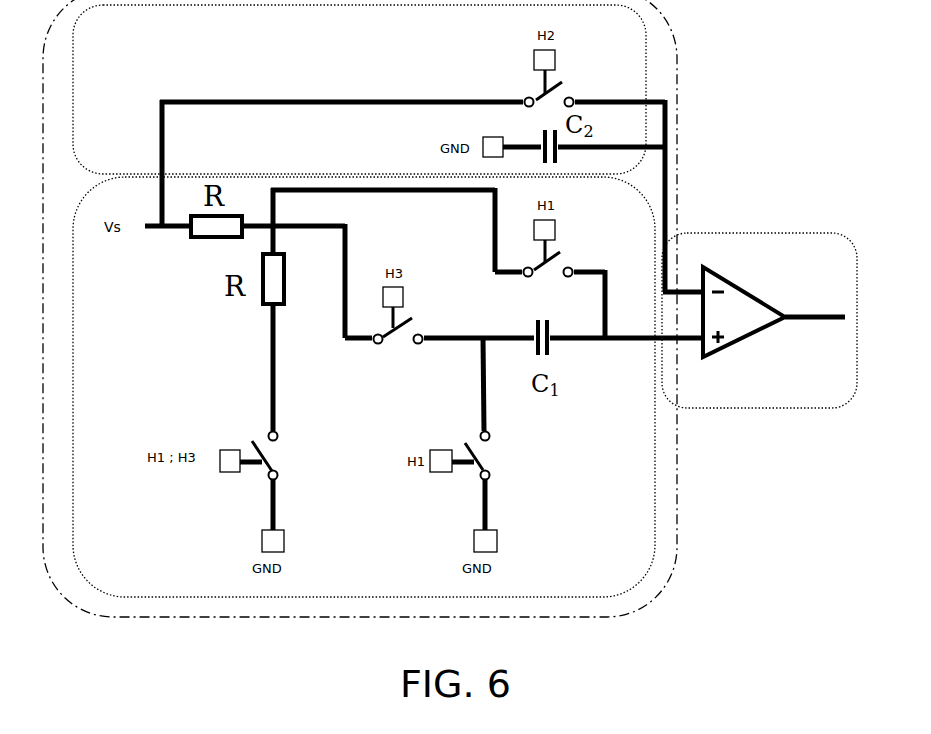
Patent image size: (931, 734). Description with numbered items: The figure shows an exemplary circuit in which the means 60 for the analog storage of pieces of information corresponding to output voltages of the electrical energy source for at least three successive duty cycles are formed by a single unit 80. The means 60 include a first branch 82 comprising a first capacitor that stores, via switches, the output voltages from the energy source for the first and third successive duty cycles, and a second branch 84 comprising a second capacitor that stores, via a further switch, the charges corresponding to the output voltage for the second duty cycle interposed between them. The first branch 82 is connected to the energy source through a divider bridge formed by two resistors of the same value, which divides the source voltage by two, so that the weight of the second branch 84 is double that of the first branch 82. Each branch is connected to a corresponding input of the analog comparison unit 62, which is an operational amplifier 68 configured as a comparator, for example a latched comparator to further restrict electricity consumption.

The means for the analog storage 60 is at (357, 324).
The single unit 80 is at (63, 572).
The first branch 82 is at (658, 528).
The second branch 84 is at (647, 44).
The analog comparison unit 62 is at (755, 408).
The operational amplifier 68 is at (750, 340).